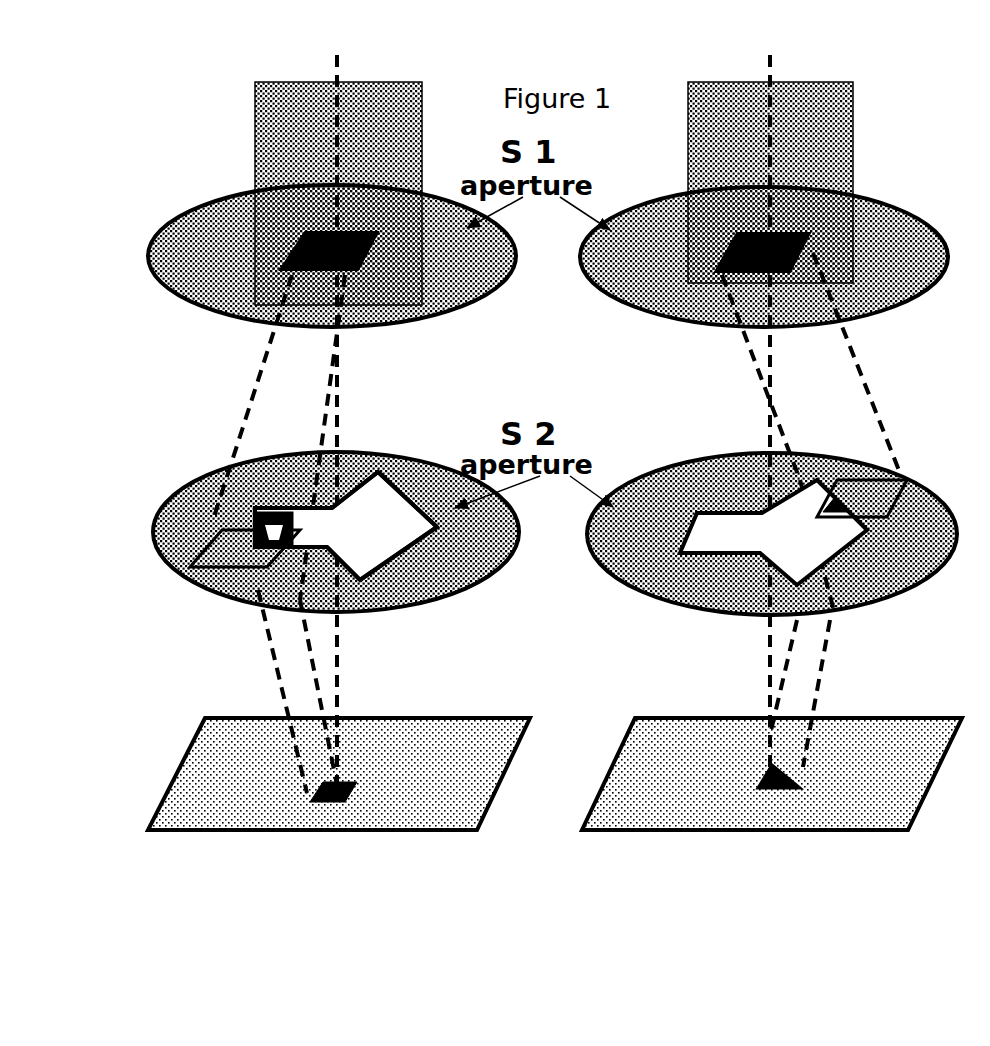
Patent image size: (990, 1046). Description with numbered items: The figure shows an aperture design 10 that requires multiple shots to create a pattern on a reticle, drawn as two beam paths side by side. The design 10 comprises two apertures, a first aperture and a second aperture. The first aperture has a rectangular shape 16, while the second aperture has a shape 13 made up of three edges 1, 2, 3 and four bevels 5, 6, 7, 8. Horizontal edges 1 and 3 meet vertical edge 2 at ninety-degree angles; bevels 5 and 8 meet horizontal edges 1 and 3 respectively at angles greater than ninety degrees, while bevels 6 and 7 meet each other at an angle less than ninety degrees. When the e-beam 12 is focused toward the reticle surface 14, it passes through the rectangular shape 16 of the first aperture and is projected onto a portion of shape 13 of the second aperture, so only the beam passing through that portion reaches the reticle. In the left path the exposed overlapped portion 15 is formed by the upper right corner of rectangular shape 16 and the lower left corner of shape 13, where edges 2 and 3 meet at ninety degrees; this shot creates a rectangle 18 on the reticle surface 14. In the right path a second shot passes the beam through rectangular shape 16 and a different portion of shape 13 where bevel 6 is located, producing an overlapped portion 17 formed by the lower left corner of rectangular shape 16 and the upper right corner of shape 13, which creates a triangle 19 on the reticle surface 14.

The aperture design 10 is at (54, 134).
The e-beam 12 is at (300, 118).
The rectangular shape 16 is at (717, 247).
The shape 13 is at (720, 527).
The overlapped portion 15 is at (250, 523).
The horizontal edge 1 is at (276, 505).
The vertical edge 2 is at (252, 512).
The horizontal edge 3 is at (287, 555).
The bevel 5 is at (363, 475).
The bevel 6 is at (420, 505).
The bevel 7 is at (403, 557).
The bevel 8 is at (343, 577).
The overlapped portion 17 is at (840, 496).
The reticle surface 14 is at (646, 800).
The rectangle 18 is at (318, 784).
The triangle 19 is at (758, 775).